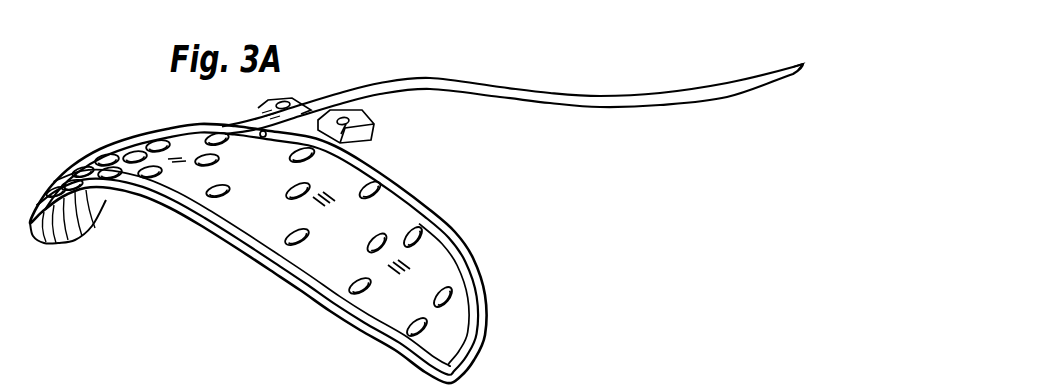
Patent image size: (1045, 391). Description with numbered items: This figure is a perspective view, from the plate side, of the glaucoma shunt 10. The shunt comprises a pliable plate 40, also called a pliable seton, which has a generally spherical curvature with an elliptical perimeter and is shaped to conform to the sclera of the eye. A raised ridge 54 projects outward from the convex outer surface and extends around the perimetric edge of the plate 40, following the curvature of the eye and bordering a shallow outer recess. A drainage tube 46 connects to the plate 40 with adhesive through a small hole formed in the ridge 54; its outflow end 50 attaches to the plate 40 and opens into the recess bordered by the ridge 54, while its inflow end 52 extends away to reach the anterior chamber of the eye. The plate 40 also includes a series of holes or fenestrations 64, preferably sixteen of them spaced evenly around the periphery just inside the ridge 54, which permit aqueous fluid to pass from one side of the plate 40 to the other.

The glaucoma shunt 10 is at (558, 183).
The pliable plate 40 is at (378, 217).
The drainage tube 46 is at (600, 86).
The outflow end 50 is at (260, 133).
The inflow end 52 is at (803, 64).
The raised ridge 54 is at (462, 267).
The fenestrations 64 is at (293, 239).